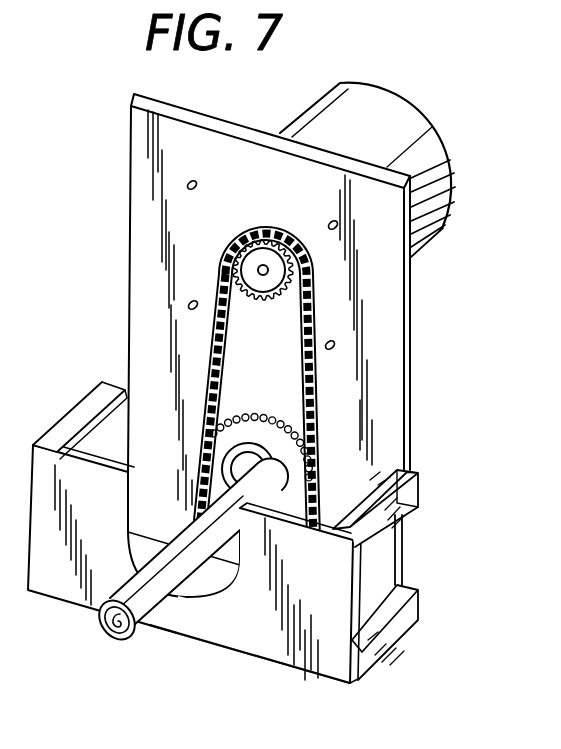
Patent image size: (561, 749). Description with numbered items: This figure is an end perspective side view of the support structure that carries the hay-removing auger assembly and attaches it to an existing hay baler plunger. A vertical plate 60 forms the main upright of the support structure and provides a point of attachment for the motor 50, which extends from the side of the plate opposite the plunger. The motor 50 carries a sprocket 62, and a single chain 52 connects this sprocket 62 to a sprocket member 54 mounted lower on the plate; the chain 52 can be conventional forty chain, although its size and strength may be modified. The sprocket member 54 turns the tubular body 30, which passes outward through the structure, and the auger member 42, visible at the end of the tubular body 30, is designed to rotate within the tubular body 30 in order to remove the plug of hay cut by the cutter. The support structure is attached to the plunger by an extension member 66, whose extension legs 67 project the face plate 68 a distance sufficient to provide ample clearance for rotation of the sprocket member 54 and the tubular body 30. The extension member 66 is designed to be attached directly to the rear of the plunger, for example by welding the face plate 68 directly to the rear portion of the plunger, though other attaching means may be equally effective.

The tubular body 30 is at (96, 597).
The auger member 42 is at (118, 630).
The motor 50 is at (412, 106).
The chain 52 is at (312, 320).
The sprocket member 54 is at (272, 427).
The vertical plate 60 is at (131, 182).
The sprocket 62 is at (239, 222).
The extension member 66 is at (30, 470).
The extension legs 67 is at (88, 392).
The face plate 68 is at (323, 655).